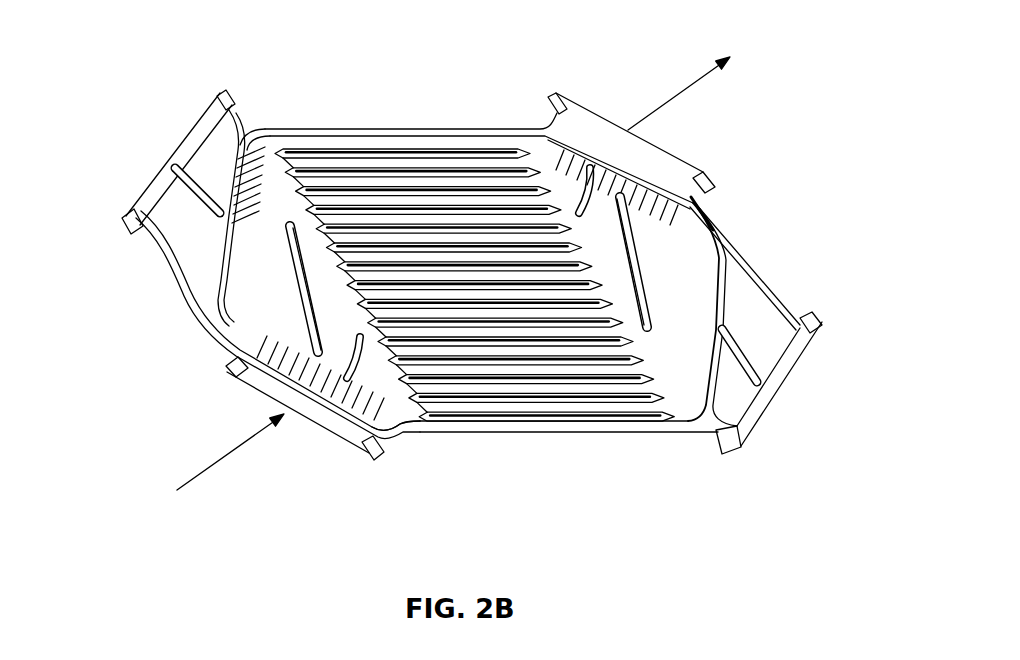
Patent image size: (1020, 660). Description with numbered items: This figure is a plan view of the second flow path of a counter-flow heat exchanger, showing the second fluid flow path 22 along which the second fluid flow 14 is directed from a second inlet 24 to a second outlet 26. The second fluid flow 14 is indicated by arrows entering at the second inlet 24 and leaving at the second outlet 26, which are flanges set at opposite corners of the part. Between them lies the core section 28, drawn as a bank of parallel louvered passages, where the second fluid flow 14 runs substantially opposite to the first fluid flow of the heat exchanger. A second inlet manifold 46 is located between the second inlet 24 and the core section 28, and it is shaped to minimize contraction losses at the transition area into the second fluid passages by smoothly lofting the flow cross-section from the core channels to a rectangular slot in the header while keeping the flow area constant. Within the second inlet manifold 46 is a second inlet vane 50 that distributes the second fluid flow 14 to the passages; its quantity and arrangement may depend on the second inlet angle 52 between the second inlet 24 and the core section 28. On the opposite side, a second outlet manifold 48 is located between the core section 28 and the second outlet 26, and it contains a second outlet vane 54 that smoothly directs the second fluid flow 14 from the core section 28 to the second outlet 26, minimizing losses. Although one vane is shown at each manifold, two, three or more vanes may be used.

The second fluid flow 14 is at (683, 90).
The second fluid flow path 22 is at (640, 250).
The second inlet 24 is at (299, 413).
The second outlet 26 is at (580, 120).
The core section 28 is at (434, 156).
The second inlet manifold 46 is at (544, 132).
The second outlet manifold 48 is at (680, 210).
The second inlet vane 50 is at (300, 267).
The second inlet angle 52 is at (400, 428).
The second outlet vane 54 is at (640, 298).